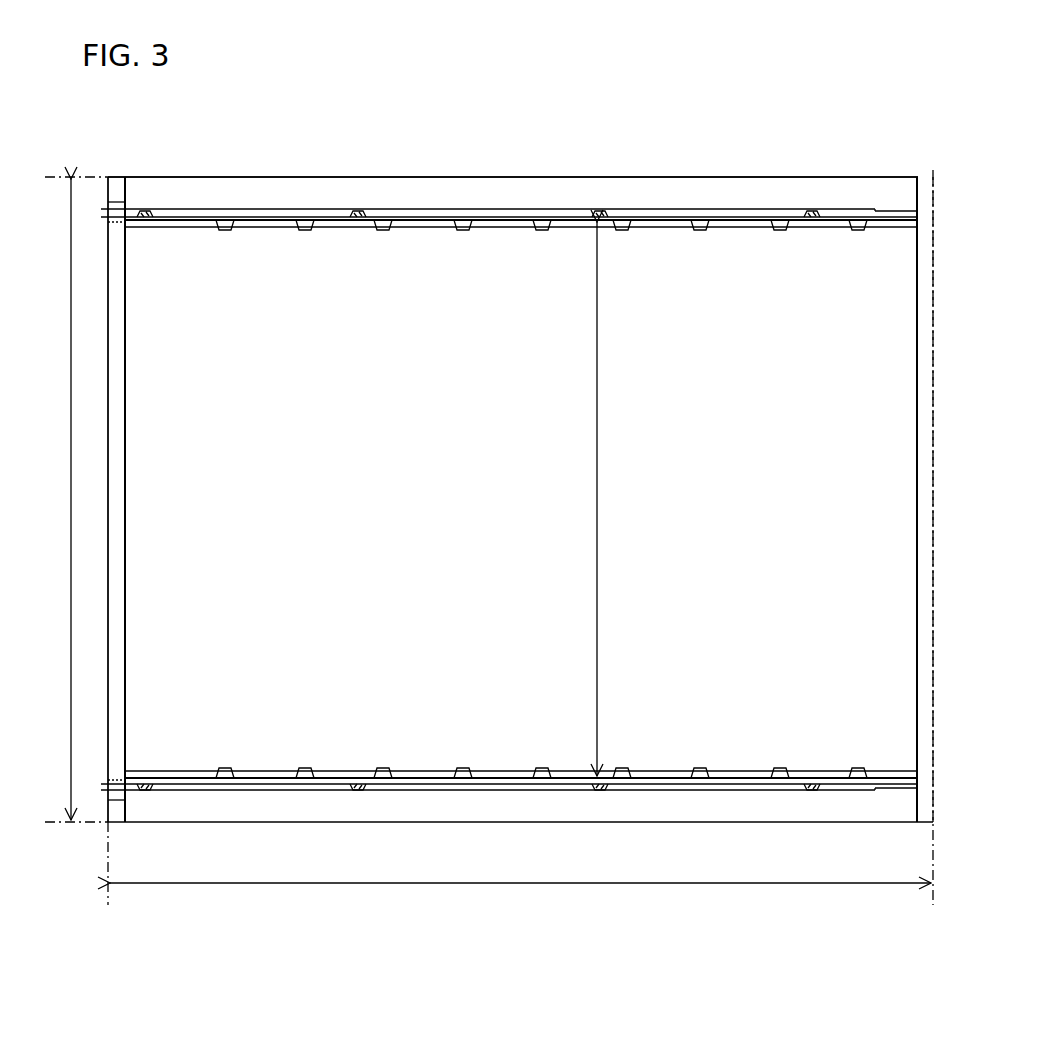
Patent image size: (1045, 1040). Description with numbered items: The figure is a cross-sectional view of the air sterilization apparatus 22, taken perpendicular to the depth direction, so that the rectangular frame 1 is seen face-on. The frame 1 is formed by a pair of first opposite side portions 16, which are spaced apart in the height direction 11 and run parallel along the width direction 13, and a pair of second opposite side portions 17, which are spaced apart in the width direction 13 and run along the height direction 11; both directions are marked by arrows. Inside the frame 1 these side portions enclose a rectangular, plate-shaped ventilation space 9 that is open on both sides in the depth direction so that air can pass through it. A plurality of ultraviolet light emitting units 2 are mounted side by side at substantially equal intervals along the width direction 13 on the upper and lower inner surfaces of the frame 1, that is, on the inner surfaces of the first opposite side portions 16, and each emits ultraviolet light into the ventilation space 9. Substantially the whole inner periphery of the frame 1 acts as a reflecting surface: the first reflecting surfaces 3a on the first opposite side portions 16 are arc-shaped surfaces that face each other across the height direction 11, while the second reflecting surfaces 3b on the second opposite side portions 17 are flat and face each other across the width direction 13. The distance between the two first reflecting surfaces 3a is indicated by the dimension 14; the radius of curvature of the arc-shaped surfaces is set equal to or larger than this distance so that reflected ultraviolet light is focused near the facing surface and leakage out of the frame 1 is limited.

The frame 1 is at (493, 195).
The ultraviolet light emitting unit 2 is at (302, 238).
The first reflecting surface 3a is at (876, 228).
The second reflecting surface 3b is at (125, 440).
The ventilation space 9 is at (384, 527).
The height direction 11 is at (70, 300).
The width direction 13 is at (762, 883).
The distance between the first reflecting surfaces 14 is at (597, 415).
The first opposite side portion 16 is at (752, 190).
The second opposite side portion 17 is at (115, 325).
The air sterilization apparatus 22 is at (394, 166).